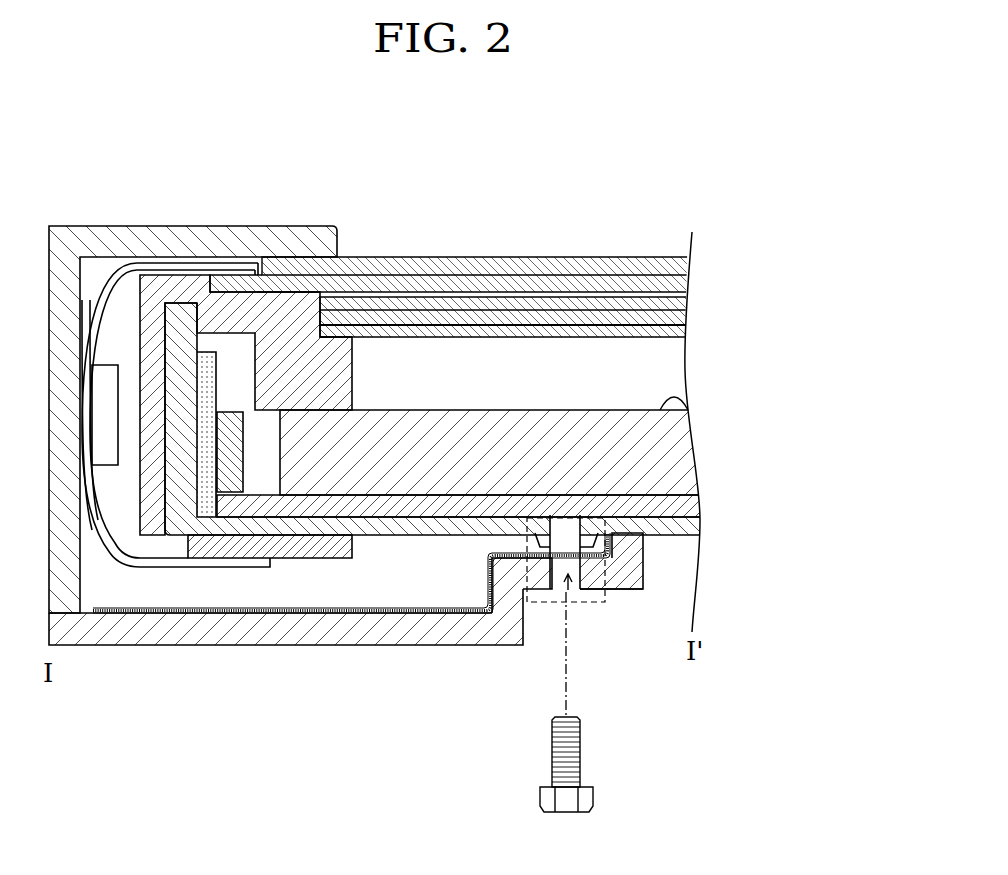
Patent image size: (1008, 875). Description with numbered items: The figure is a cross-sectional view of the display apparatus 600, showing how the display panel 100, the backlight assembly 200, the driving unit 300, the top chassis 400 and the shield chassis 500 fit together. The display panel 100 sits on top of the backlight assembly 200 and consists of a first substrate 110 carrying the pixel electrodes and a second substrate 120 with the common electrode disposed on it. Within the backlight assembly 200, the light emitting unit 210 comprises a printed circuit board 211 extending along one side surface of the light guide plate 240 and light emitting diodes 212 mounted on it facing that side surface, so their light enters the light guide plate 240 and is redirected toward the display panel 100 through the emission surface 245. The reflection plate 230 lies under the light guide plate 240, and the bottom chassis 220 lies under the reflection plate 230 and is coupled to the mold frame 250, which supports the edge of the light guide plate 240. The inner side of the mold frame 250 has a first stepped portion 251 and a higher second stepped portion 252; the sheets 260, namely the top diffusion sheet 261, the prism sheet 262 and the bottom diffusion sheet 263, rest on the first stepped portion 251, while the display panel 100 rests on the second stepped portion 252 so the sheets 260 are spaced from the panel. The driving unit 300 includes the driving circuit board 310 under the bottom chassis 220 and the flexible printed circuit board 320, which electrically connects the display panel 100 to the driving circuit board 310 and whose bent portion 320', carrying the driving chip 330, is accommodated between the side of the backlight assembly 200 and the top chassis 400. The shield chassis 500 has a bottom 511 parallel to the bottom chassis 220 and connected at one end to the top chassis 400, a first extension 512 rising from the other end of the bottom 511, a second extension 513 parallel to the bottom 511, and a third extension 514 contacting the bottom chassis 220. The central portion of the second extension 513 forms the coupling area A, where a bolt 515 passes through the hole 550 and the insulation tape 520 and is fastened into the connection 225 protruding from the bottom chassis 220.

The display panel 100 is at (506, 260).
The first substrate 110 is at (679, 285).
The second substrate 120 is at (682, 265).
The backlight assembly 200 is at (820, 318).
The light emitting unit 210 is at (327, 158).
The printed circuit board 211 is at (207, 363).
The light emitting diodes 212 is at (229, 427).
The bottom chassis 220 is at (683, 525).
The connection 225 is at (647, 563).
The reflection plate 230 is at (690, 502).
The light guide plate 240 is at (680, 453).
The emission surface 245 is at (688, 394).
The mold frame 250 is at (340, 372).
The first stepped portion 251 is at (342, 340).
The second stepped portion 252 is at (307, 293).
The sheets 260 is at (561, 326).
The top diffusion sheet 261 is at (677, 305).
The prism sheet 262 is at (677, 318).
The bottom diffusion sheet 263 is at (680, 332).
The driving unit 300 is at (293, 697).
The driving circuit board 310 is at (233, 550).
The flexible printed circuit board 320 is at (346, 482).
The bent portion 320' is at (102, 500).
The driving chip 330 is at (108, 447).
The top chassis 400 is at (159, 236).
The shield chassis 500 is at (392, 655).
The bottom 511 is at (458, 633).
The first extension 512 is at (512, 605).
The second extension 513 is at (590, 586).
The third extension 514 is at (605, 577).
The bolt 515 is at (552, 757).
The insulation tape 520 is at (593, 540).
The hole 550 is at (568, 592).
The display apparatus 600 is at (587, 213).
The coupling area A is at (605, 597).